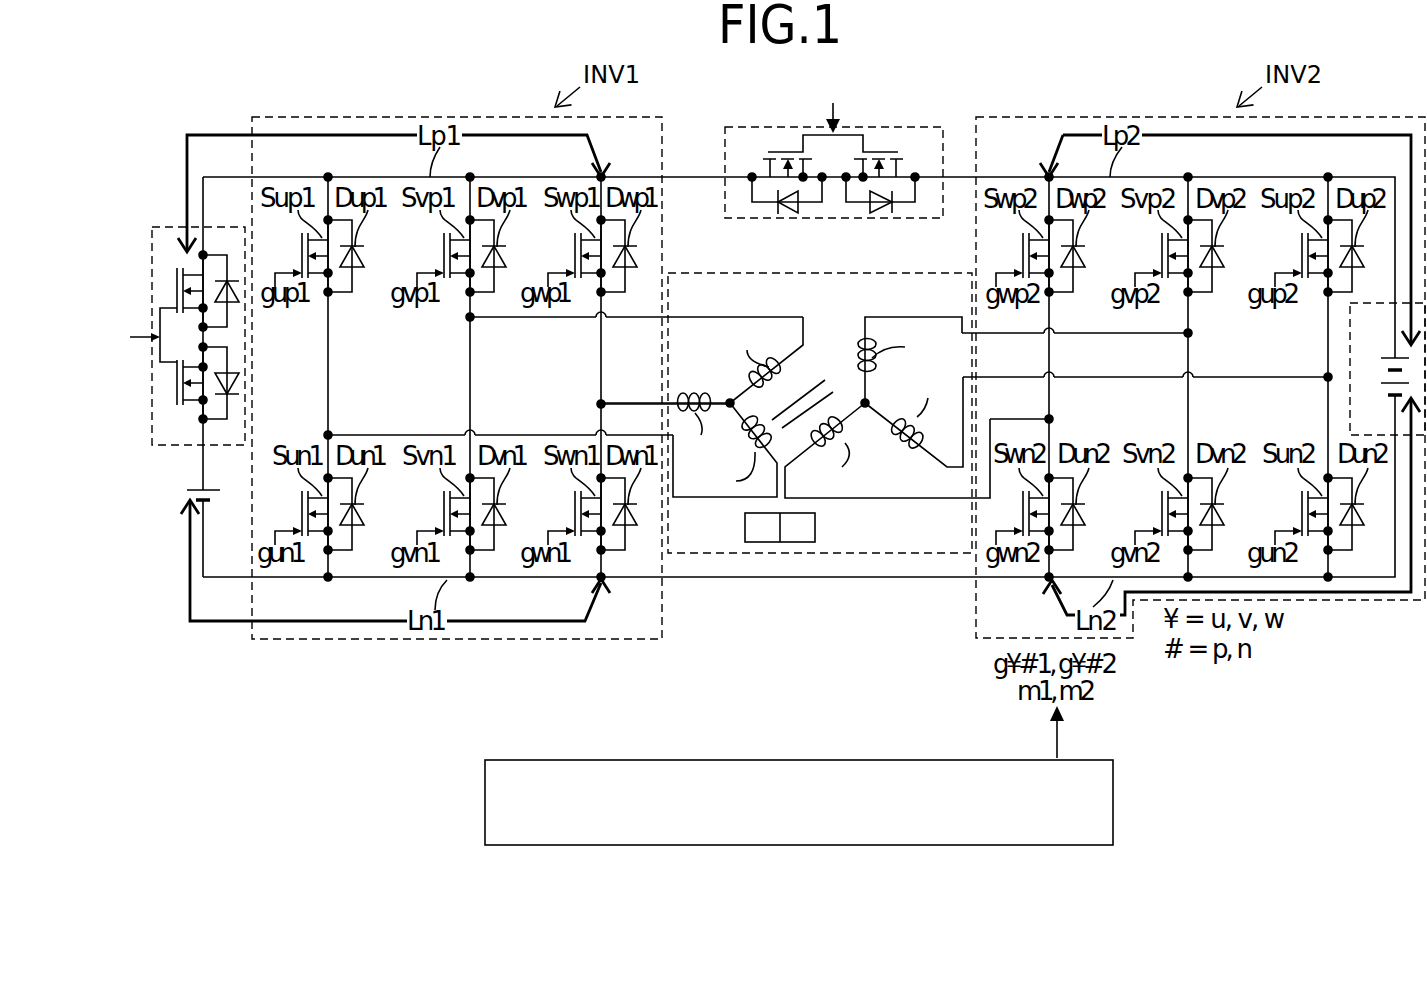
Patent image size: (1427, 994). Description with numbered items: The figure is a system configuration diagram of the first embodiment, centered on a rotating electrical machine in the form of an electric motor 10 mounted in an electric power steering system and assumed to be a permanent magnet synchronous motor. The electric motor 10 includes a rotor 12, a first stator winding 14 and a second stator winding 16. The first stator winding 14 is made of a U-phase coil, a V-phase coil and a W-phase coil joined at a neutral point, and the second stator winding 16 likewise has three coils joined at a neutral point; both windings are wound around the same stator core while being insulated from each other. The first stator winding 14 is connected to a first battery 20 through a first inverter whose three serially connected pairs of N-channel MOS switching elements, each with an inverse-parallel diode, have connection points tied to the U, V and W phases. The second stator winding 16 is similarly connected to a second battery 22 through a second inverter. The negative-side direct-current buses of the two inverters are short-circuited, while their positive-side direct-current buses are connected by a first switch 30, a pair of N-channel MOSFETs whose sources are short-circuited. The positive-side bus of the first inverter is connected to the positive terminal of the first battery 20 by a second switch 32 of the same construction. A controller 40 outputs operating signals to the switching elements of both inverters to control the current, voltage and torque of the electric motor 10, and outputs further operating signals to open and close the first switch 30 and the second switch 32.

The electric motor 10 is at (677, 272).
The rotor 12 is at (815, 533).
The first stator winding 14 is at (742, 307).
The second stator winding 16 is at (882, 307).
The first battery 20 is at (192, 488).
The second battery 22 is at (1393, 356).
The first switch 30 is at (923, 118).
The second switch 32 is at (177, 225).
The controller 40 is at (1113, 800).